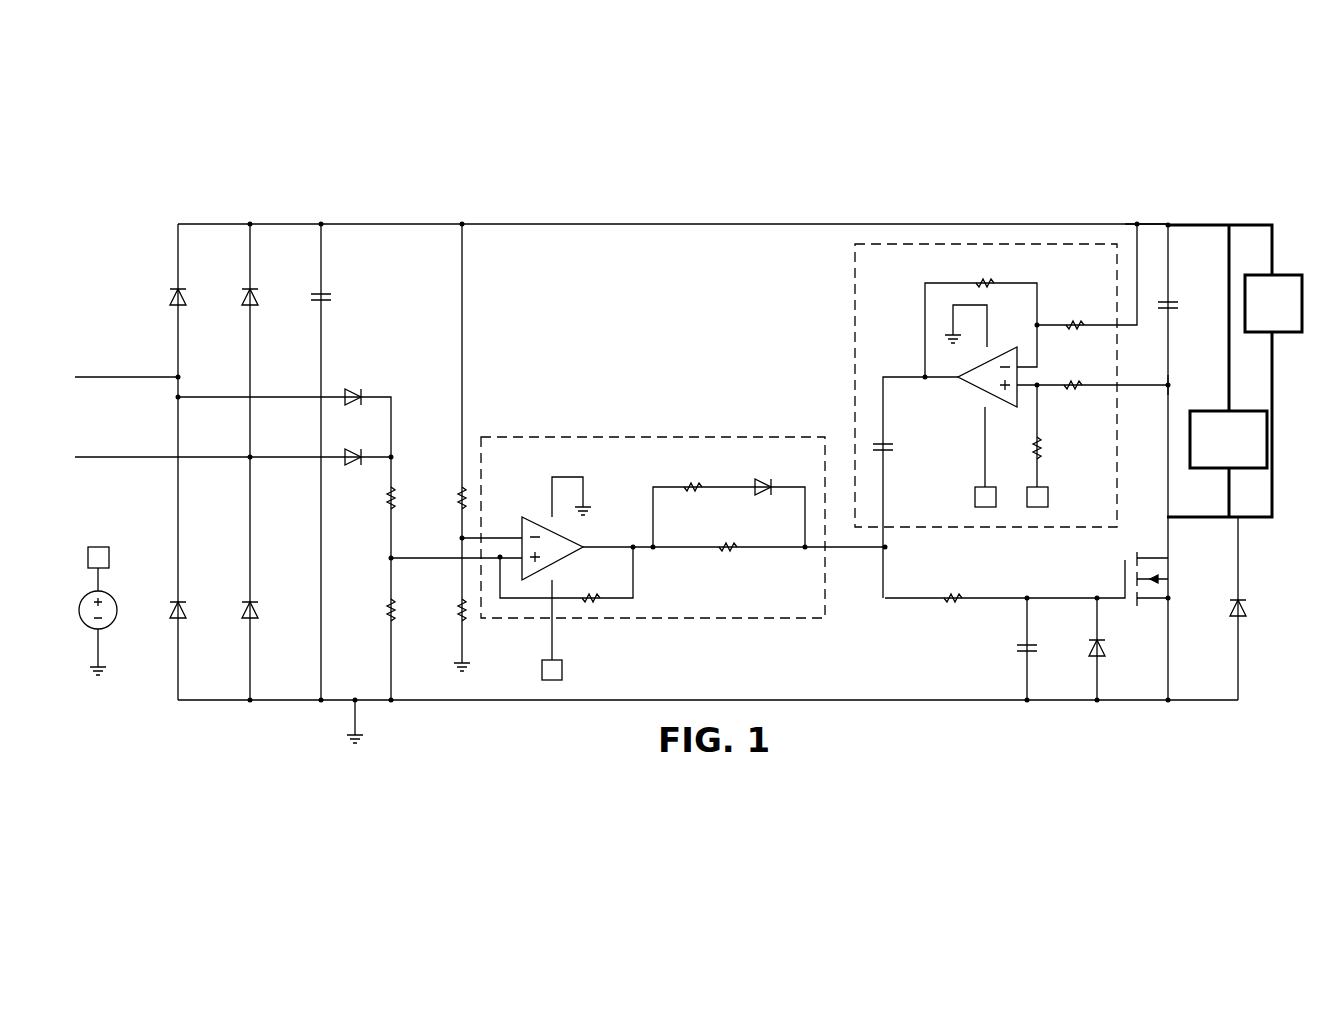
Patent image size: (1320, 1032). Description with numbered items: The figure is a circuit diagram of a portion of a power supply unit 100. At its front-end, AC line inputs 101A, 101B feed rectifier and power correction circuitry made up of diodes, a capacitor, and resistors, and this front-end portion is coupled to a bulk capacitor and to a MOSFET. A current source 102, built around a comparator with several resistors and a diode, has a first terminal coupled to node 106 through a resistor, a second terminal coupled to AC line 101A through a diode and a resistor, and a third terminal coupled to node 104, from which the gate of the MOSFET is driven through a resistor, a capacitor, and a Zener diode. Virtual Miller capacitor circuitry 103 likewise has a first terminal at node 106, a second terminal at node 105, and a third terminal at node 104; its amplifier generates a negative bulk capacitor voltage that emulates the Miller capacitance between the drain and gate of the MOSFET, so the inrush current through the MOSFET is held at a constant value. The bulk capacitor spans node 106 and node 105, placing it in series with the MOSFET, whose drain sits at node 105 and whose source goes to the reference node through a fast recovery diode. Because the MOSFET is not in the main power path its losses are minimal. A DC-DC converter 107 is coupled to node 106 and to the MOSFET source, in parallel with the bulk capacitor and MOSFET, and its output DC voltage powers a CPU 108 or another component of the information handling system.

The power supply unit 100 is at (388, 199).
The AC line input 101A is at (131, 377).
The AC line input 101B is at (132, 458).
The current source 102 is at (652, 437).
The virtual Miller capacitor circuitry 103 is at (853, 325).
The node 104 is at (878, 551).
The node 105 is at (1170, 383).
The node 106 is at (1140, 222).
The DC-DC converter 107 is at (1228, 439).
The CPU 108 is at (1273, 303).